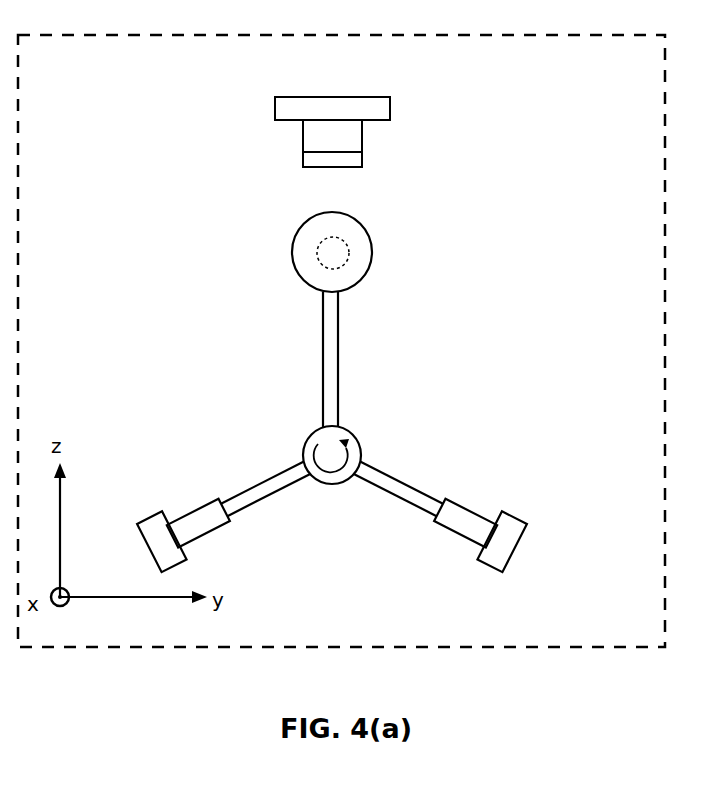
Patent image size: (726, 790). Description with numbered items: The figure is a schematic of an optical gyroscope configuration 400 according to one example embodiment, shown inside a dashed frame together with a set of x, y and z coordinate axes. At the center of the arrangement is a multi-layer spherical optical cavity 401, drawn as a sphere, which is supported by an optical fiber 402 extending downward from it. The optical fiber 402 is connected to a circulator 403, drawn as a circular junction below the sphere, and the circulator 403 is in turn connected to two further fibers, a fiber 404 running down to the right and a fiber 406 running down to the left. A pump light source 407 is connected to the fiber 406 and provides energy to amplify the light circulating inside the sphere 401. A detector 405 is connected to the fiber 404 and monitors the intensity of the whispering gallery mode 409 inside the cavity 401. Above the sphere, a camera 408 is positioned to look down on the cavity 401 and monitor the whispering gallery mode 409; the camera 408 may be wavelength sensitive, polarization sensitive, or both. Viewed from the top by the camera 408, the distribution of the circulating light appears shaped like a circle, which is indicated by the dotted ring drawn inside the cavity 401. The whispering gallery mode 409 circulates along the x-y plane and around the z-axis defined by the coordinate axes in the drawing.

The optical gyroscope configuration 400 is at (341, 341).
The optical cavity 401 is at (360, 225).
The optical fiber 402 is at (339, 317).
The circulator 403 is at (355, 433).
The fiber 404 is at (408, 487).
The detector 405 is at (520, 508).
The fiber 406 is at (262, 498).
The pump light source 407 is at (190, 510).
The camera 408 is at (360, 125).
The whispering gallery mode 409 is at (350, 253).